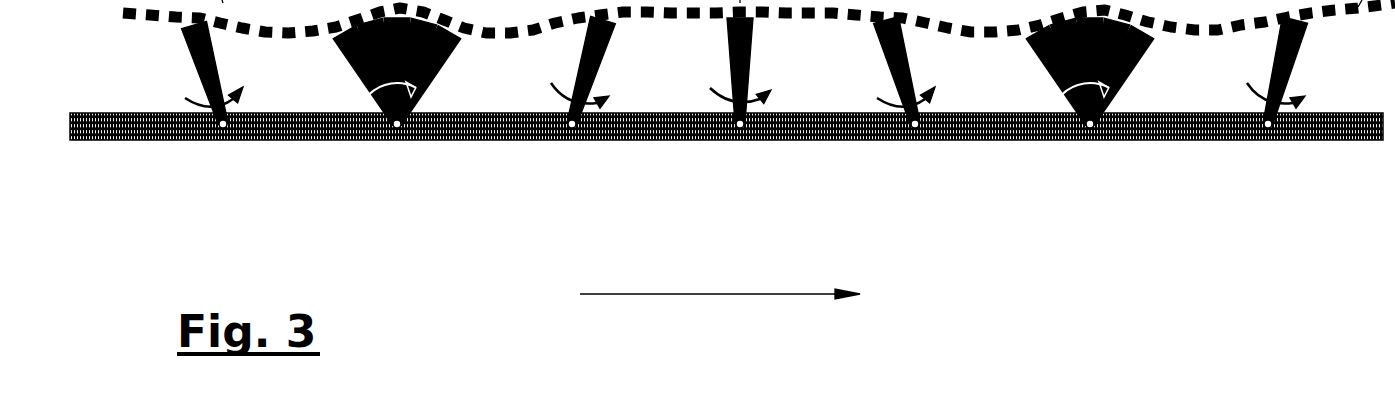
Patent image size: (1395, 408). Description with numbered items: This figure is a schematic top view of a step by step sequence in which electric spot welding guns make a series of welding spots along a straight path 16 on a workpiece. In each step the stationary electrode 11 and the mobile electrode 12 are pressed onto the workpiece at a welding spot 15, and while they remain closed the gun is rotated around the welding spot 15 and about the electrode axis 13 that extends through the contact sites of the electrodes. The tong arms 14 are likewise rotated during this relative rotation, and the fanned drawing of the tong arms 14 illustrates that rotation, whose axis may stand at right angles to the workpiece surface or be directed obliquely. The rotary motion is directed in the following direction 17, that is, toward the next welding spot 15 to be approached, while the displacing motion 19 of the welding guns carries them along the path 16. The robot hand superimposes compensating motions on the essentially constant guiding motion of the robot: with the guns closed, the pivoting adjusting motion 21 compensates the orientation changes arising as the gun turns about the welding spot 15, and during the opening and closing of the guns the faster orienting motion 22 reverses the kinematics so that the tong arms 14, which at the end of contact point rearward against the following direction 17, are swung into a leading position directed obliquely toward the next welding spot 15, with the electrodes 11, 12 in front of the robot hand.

The stationary electrode 11 is at (884, 169).
The mobile electrode 12 is at (913, 128).
The electrode axis 13 is at (787, 169).
The tong arm 14 is at (190, 53).
The welding spot 15 is at (400, 127).
The path 16 is at (127, 122).
The following direction 17 is at (747, 296).
The displacing motion 19 is at (720, 331).
The adjusting motion 21 is at (377, 98).
The orienting motion 22 is at (200, 102).